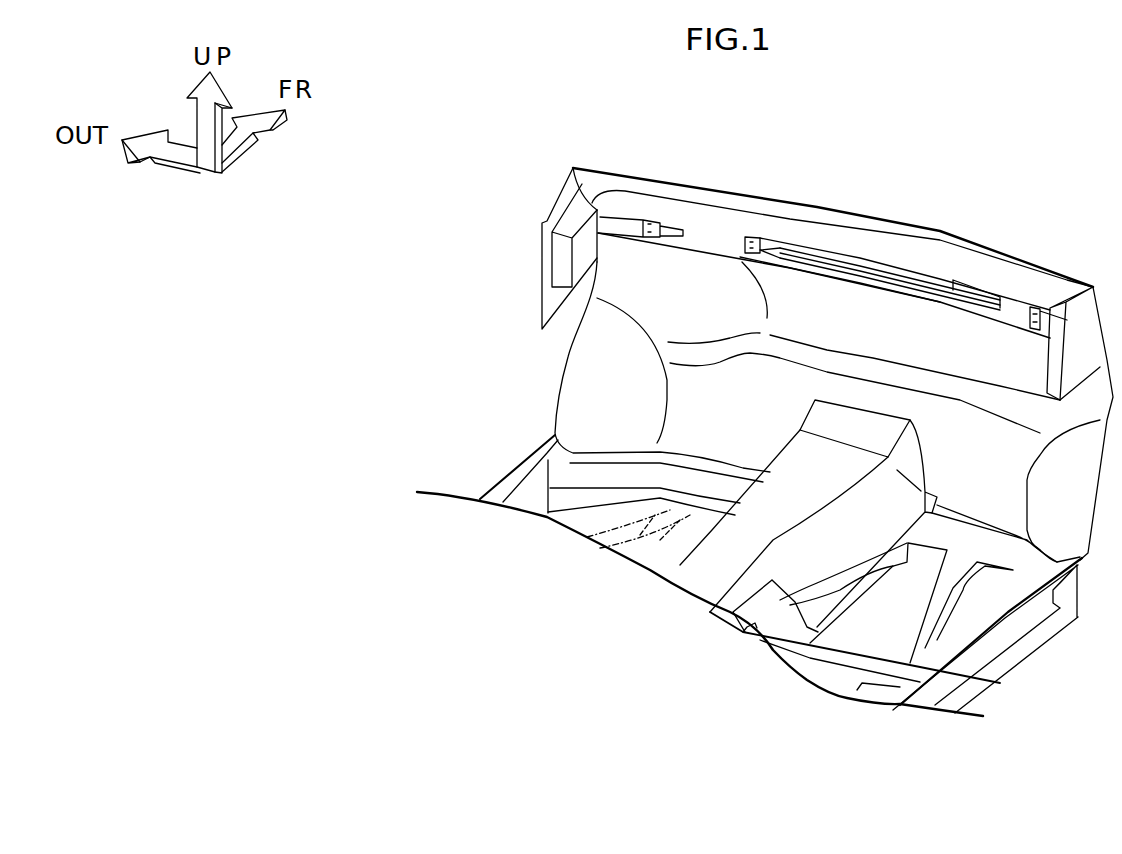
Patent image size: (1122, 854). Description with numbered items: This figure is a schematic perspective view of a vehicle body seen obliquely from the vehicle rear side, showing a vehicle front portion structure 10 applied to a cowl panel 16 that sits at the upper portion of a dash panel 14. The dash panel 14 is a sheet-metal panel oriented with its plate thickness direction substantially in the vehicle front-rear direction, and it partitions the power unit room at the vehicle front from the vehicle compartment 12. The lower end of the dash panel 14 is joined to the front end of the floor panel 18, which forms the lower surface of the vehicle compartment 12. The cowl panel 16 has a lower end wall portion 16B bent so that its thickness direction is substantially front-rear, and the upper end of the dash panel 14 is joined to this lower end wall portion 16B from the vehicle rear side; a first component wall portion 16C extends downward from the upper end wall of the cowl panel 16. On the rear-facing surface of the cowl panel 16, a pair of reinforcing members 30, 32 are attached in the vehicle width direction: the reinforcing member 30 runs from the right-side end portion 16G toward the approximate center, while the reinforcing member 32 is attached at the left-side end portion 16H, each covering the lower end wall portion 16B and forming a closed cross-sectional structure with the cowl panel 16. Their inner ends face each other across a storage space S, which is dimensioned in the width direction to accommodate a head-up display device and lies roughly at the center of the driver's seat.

The vehicle front portion structure 10 is at (1062, 212).
The vehicle compartment 12 is at (733, 429).
The dash panel 14 is at (975, 420).
The cowl panel 16 is at (887, 212).
The lower end wall portion 16B is at (797, 266).
The first component wall portion 16C is at (803, 216).
The end portion on the right side 16G is at (1058, 300).
The end portion on the left side 16H is at (593, 201).
The floor panel 18 is at (860, 640).
The reinforcing member 30 is at (861, 276).
The reinforcing member 32 is at (628, 237).
The storage space S is at (714, 240).